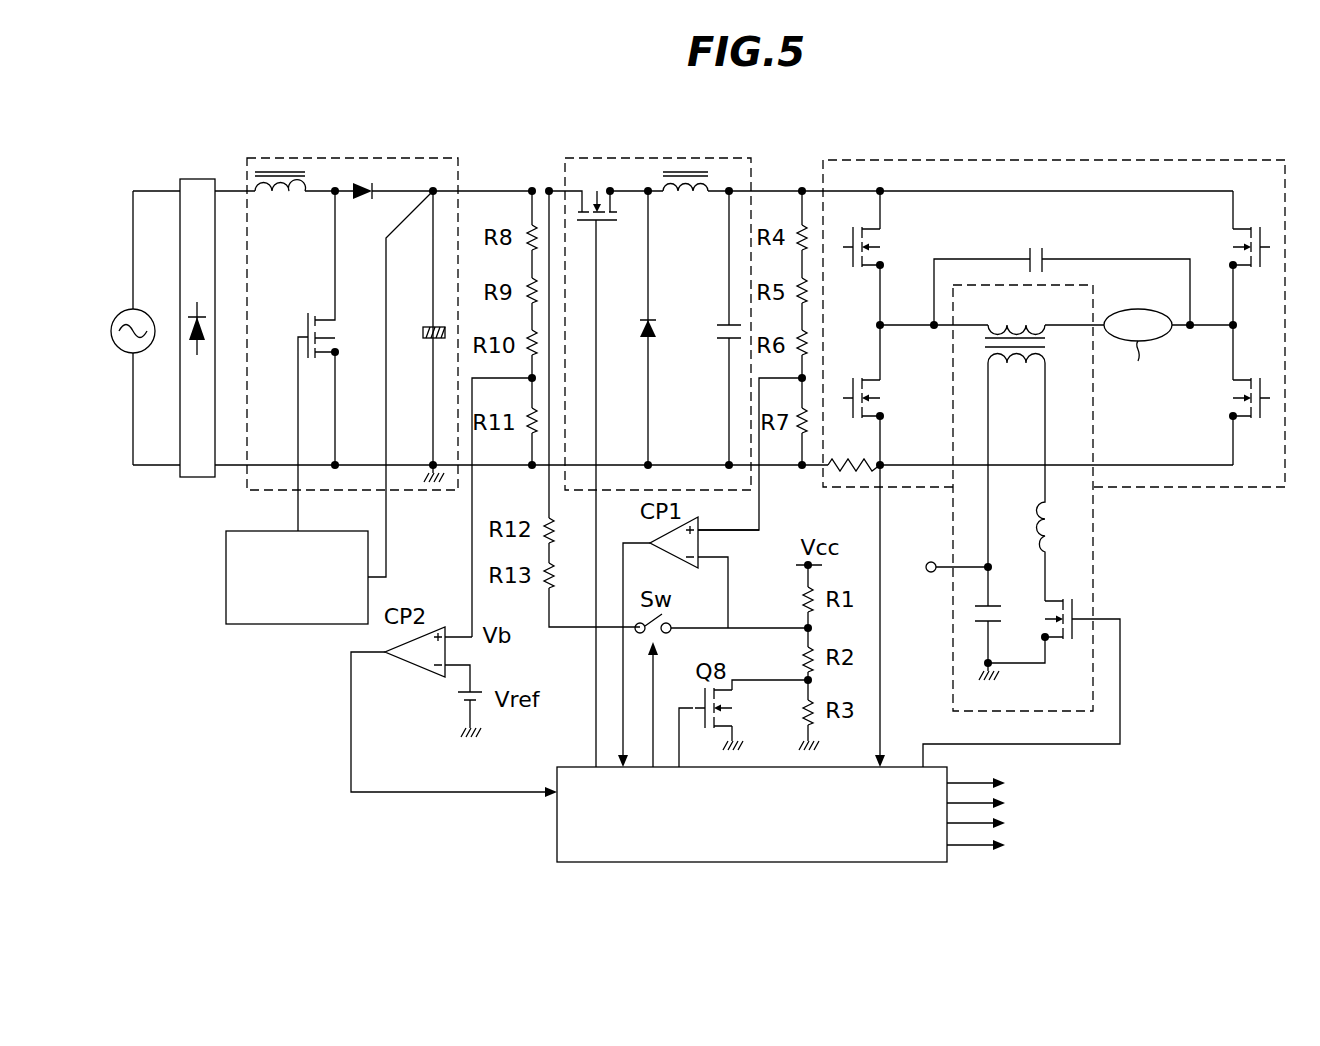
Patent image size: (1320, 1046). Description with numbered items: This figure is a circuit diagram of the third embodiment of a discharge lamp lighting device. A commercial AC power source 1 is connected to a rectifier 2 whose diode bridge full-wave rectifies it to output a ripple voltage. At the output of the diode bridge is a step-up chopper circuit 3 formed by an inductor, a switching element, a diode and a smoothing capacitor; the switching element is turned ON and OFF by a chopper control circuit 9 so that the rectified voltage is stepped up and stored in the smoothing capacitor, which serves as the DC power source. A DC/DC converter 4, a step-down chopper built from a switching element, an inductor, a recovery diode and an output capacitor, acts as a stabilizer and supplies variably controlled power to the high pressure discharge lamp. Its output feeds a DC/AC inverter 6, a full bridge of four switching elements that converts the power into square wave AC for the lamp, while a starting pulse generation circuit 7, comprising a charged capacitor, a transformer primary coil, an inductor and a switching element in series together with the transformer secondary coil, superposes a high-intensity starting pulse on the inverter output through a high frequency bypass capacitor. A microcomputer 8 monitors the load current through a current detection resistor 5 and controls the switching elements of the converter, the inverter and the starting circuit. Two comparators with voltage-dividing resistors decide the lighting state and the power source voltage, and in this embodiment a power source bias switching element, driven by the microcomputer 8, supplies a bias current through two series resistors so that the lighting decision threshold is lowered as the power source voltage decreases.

The commercial AC power source 1 is at (111, 331).
The rectifier 2 is at (197, 179).
The step-up chopper circuit 3 is at (337, 158).
The DC/DC converter 4 is at (645, 158).
The current detection resistor 5 is at (852, 472).
The DC/AC inverter 6 is at (1000, 160).
The starting pulse generation circuit 7 is at (1093, 546).
The microcomputer 8 is at (557, 813).
The chopper control circuit 9 is at (297, 624).